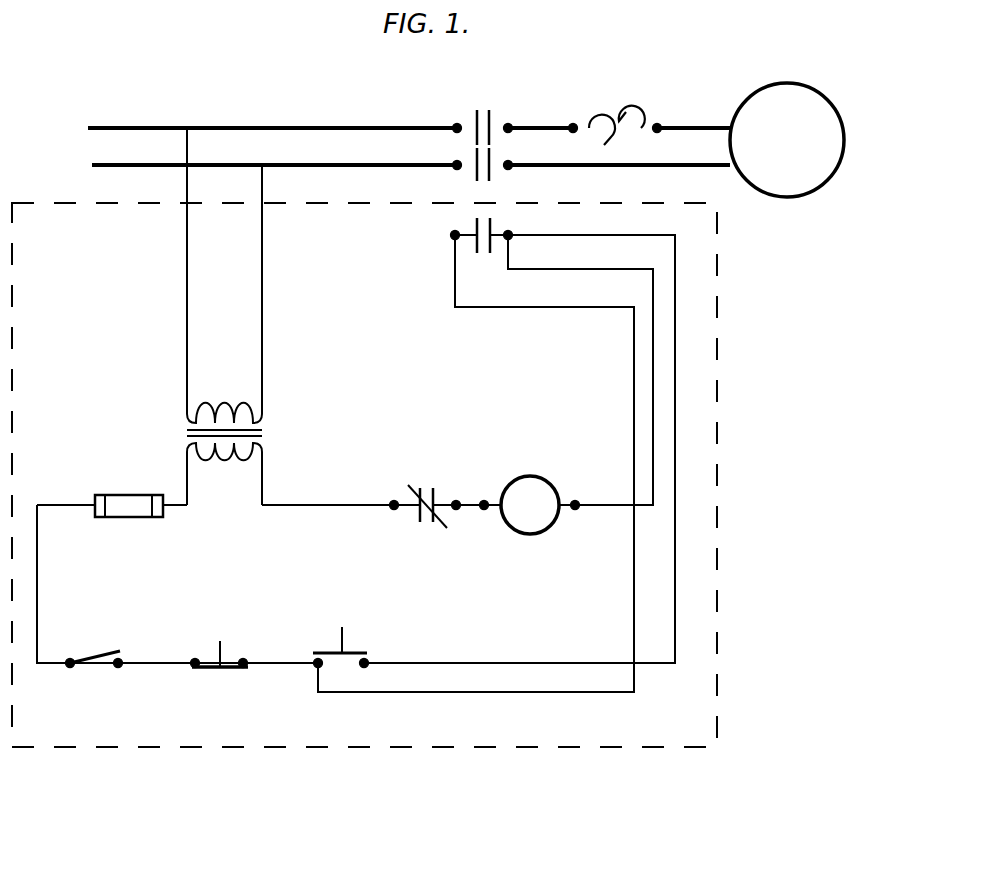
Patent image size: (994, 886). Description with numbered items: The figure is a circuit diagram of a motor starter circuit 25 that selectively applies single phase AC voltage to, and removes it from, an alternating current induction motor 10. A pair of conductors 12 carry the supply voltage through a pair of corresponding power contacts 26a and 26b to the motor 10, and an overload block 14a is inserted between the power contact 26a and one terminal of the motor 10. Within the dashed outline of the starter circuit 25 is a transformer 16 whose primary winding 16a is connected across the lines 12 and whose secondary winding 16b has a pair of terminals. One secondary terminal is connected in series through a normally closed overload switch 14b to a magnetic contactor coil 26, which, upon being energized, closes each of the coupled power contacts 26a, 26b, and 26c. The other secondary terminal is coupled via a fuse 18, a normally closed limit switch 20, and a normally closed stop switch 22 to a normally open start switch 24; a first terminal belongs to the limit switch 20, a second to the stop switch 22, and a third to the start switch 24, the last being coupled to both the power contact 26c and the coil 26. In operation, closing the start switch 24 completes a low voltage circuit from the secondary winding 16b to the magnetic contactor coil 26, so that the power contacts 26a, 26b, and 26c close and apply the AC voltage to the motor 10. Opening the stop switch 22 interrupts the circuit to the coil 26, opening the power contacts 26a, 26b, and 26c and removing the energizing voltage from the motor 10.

The alternating current induction motor 10 is at (828, 104).
The pair of conductors 12 is at (100, 128).
The overload block 14a is at (616, 118).
The normally closed overload switch 14b is at (436, 496).
The transformer 16 is at (237, 438).
The primary winding 16a is at (227, 404).
The secondary winding 16b is at (226, 461).
The fuse 18 is at (110, 495).
The normally closed limit switch 20 is at (100, 657).
The normally closed stop switch 22 is at (220, 641).
The normally open start switch 24 is at (343, 640).
The motor starter circuit 25 is at (712, 550).
The magnetic contactor coil 26 is at (553, 492).
The power contact 26a is at (491, 116).
The power contact 26b is at (491, 162).
The power contact 26c is at (491, 240).